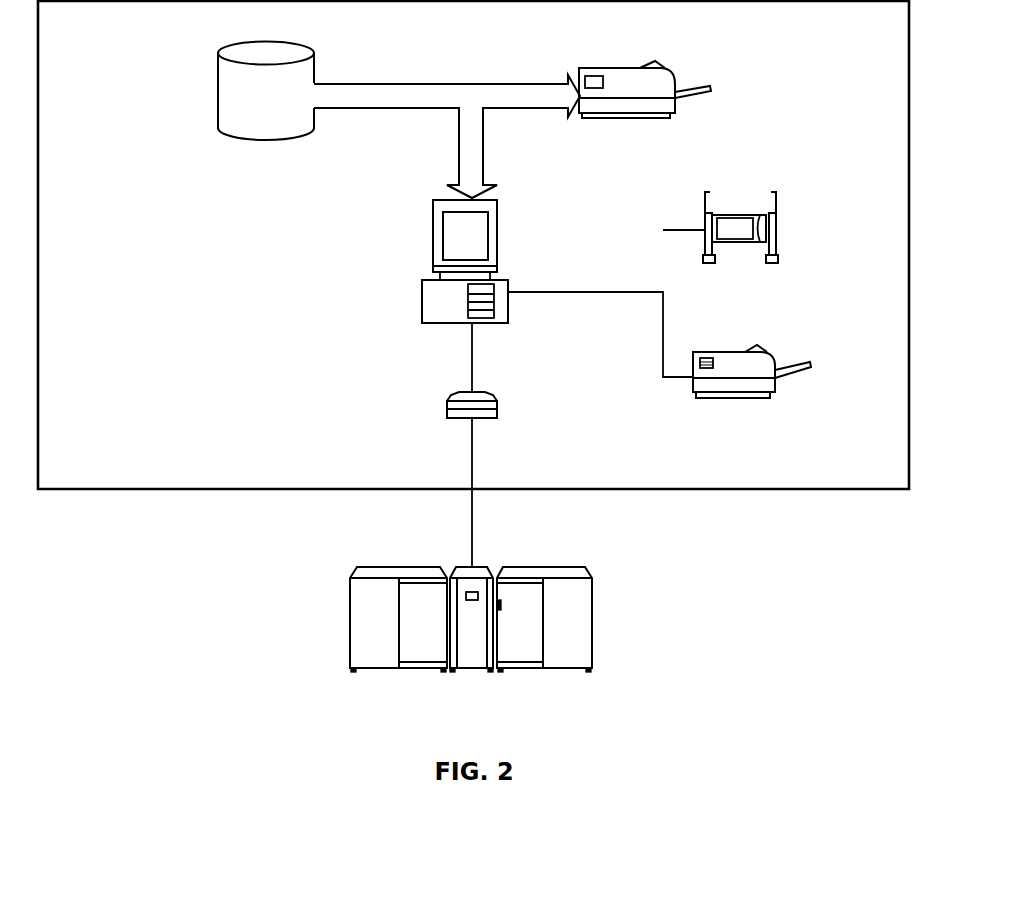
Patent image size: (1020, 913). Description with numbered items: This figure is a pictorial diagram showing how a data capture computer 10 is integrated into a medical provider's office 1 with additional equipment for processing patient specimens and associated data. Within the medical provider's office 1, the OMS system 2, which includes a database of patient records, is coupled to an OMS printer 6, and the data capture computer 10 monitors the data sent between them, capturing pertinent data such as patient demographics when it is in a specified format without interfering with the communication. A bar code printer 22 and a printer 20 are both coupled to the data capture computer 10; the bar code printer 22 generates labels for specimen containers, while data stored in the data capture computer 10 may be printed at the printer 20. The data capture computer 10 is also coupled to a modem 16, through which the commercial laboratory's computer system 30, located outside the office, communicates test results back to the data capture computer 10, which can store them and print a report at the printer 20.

The medical provider's office 1 is at (473, 245).
The OMS system 2 is at (251, 91).
The OMS printer 6 is at (645, 93).
The data capture computer 10 is at (461, 282).
The modem 16 is at (457, 416).
The printer 20 is at (752, 375).
The bar code printer 22 is at (753, 217).
The laboratory computer system 30 is at (454, 624).